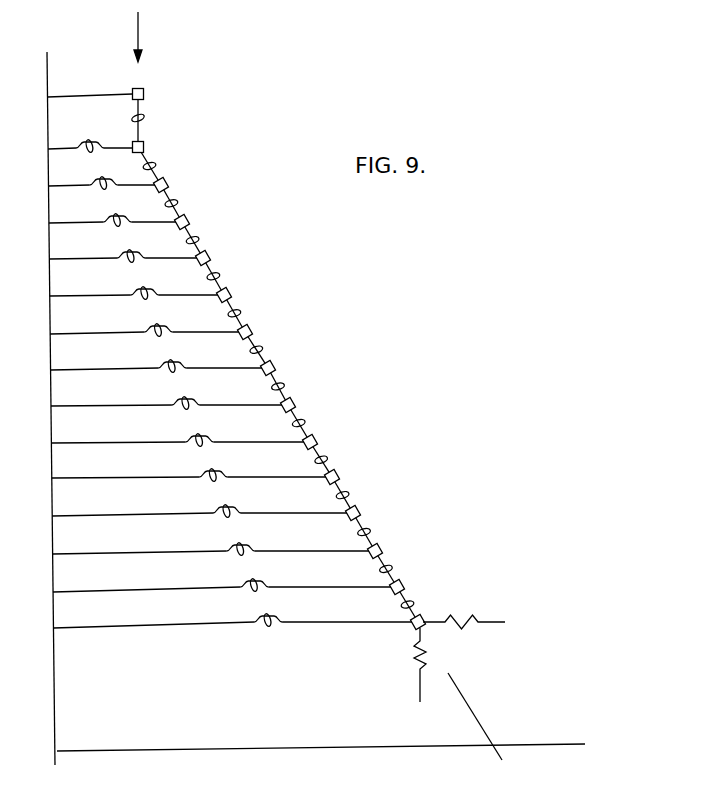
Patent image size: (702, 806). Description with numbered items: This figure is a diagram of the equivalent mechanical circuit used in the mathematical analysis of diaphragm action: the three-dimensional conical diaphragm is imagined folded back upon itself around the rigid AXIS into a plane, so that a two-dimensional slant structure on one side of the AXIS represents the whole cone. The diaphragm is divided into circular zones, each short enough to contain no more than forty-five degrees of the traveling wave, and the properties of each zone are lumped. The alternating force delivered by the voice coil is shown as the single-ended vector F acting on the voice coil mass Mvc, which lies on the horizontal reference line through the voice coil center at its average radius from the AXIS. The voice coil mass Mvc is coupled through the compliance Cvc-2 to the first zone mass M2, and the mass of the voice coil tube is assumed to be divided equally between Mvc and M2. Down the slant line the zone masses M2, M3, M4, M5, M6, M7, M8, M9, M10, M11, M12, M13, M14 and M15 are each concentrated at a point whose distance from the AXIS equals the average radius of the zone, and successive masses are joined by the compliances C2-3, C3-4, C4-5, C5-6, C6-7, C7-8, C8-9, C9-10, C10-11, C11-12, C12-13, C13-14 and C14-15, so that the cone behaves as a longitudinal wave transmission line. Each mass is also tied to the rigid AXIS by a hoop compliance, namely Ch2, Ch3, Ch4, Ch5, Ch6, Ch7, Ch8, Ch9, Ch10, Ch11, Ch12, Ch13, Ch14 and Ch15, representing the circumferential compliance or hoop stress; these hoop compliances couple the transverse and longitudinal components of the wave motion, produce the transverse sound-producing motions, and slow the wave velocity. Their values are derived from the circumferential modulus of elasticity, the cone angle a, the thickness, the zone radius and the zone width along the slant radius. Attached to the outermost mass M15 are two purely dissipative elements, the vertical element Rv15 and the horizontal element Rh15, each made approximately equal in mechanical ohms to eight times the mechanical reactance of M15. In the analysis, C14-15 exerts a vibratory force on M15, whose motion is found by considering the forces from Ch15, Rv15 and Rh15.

The alternating force F is at (146, 37).
The axis AXIS is at (35, 408).
The voice coil mass Mvc is at (161, 92).
The compliance between voice coil and M2 Cvc-2 is at (155, 116).
The mass M2 is at (157, 136).
The mass M3 is at (178, 174).
The mass M4 is at (199, 211).
The mass M5 is at (220, 247).
The mass M6 is at (241, 284).
The mass M7 is at (262, 321).
The mass M8 is at (285, 357).
The mass M9 is at (305, 394).
The mass M10 is at (330, 428).
The mass M11 is at (352, 463).
The mass M12 is at (373, 499).
The mass M13 is at (395, 537).
The mass M14 is at (417, 573).
The outermost mass M15 is at (438, 609).
The compliance between masses C2-3 is at (160, 156).
The compliance between masses C3-4 is at (183, 193).
The compliance between masses C4-5 is at (204, 230).
The compliance between masses C5-6 is at (225, 266).
The compliance between masses C6-7 is at (246, 303).
The compliance between masses C7-8 is at (267, 340).
The compliance between masses C8-9 is at (290, 376).
The compliance between masses C9-10 is at (310, 413).
The compliance between masses C10-11 is at (332, 450).
The compliance between masses C11-12 is at (354, 485).
The compliance between masses C12-13 is at (375, 521).
The compliance between masses C13-14 is at (397, 559).
The compliance between masses C14-15 is at (419, 595).
The hoop compliance Ch2 is at (90, 136).
The hoop compliance Ch3 is at (103, 176).
The hoop compliance Ch4 is at (113, 213).
The hoop compliance Ch5 is at (124, 249).
The hoop compliance Ch6 is at (135, 286).
The hoop compliance Ch7 is at (145, 323).
The hoop compliance Ch8 is at (158, 359).
The hoop compliance Ch9 is at (167, 396).
The hoop compliance Ch10 is at (178, 433).
The hoop compliance Ch11 is at (190, 468).
The hoop compliance Ch12 is at (200, 505).
The hoop compliance Ch13 is at (212, 543).
The hoop compliance Ch14 is at (223, 580).
The hoop compliance Ch15 is at (233, 616).
The horizontal dissipative element Rh15 is at (466, 637).
The vertical dissipative element Rv15 is at (388, 665).
The cone angle a is at (463, 705).